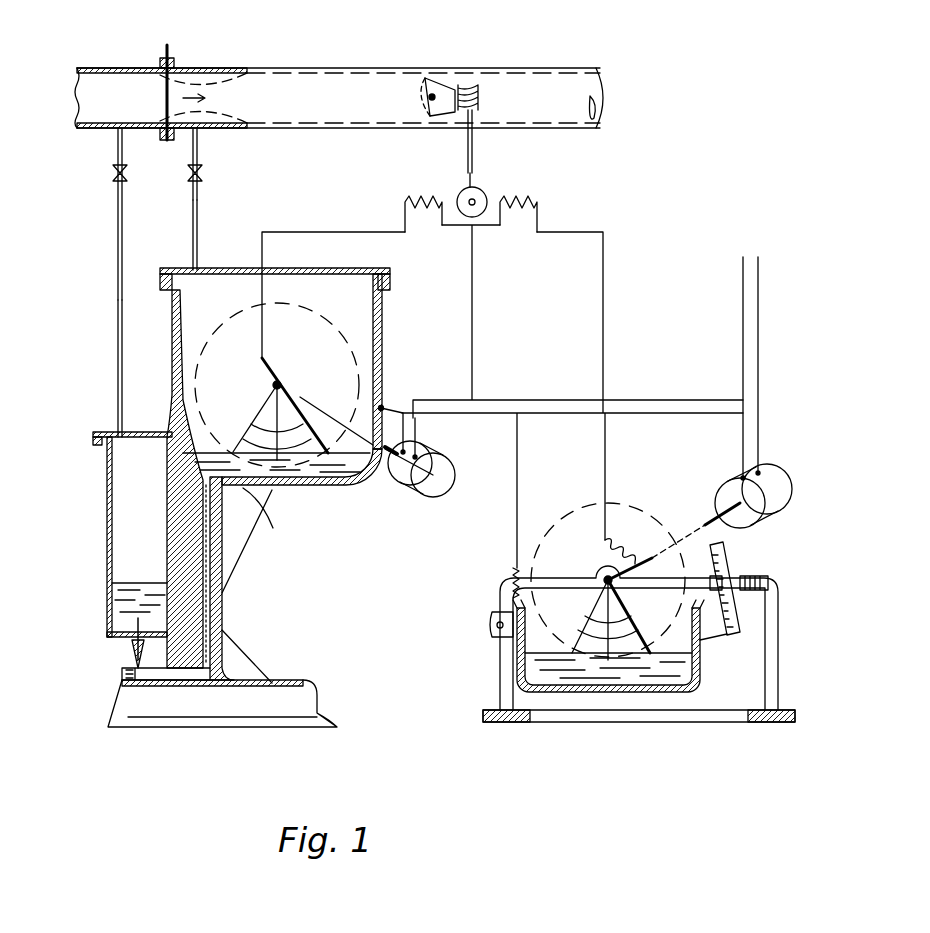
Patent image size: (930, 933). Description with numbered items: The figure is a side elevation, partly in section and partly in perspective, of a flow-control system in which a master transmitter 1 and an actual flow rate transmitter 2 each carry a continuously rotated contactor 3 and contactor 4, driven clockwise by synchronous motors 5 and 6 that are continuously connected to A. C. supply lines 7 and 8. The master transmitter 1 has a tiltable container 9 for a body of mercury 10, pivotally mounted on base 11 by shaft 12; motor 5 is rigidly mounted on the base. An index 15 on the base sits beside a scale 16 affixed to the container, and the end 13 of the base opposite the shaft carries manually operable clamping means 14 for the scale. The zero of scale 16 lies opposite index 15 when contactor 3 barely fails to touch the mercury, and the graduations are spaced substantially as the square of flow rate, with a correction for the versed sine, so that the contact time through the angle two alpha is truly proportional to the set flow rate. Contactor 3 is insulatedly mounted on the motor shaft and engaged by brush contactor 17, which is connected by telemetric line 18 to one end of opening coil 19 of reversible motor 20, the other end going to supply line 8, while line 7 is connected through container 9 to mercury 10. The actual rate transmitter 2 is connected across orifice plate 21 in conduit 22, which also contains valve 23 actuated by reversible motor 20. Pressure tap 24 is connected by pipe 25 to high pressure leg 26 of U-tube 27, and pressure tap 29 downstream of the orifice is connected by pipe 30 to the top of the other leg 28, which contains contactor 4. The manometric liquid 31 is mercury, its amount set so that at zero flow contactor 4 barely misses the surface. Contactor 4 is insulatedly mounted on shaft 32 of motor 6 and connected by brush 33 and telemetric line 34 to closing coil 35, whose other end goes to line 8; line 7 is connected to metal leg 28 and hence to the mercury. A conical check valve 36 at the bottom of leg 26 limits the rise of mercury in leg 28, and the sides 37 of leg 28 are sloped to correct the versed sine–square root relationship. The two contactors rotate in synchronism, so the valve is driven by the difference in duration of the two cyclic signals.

The master transmitter 1 is at (603, 724).
The actual flow rate transmitter 2 is at (237, 578).
The contactor 3 is at (632, 625).
The contactor 4 is at (282, 409).
The synchronous motor 5 is at (770, 480).
The synchronous motor 6 is at (433, 497).
The A. C. supply line 7 is at (743, 260).
The A. C. supply line 8 is at (758, 260).
The tiltable container 9 is at (702, 668).
The mercury 10 is at (647, 672).
The base 11 is at (500, 660).
The shaft 12 is at (490, 626).
The end of base 13 is at (735, 574).
The clamping means 14 is at (760, 576).
The index 15 is at (745, 590).
The scale 16 is at (742, 618).
The brush contactor 17 is at (622, 588).
The telemetric line 18 is at (608, 385).
The opening coil 19 is at (516, 196).
The reversible motor 20 is at (476, 192).
The orifice plate 21 is at (167, 100).
The conduit 22 is at (250, 70).
The valve 23 is at (432, 95).
The pressure tap 24 is at (112, 135).
The pipe 25 is at (116, 243).
The high pressure leg 26 is at (105, 466).
The U-tube 27 is at (172, 420).
The leg 28 is at (383, 406).
The pressure tap 29 is at (200, 135).
The pipe 30 is at (200, 222).
The manometric liquid 31 is at (110, 600).
The shaft 32 is at (392, 460).
The brush 33 is at (268, 365).
The telemetric line 34 is at (262, 245).
The closing coil 35 is at (405, 205).
The conical check valve 36 is at (130, 658).
The sides of U-tube leg 37 is at (274, 517).